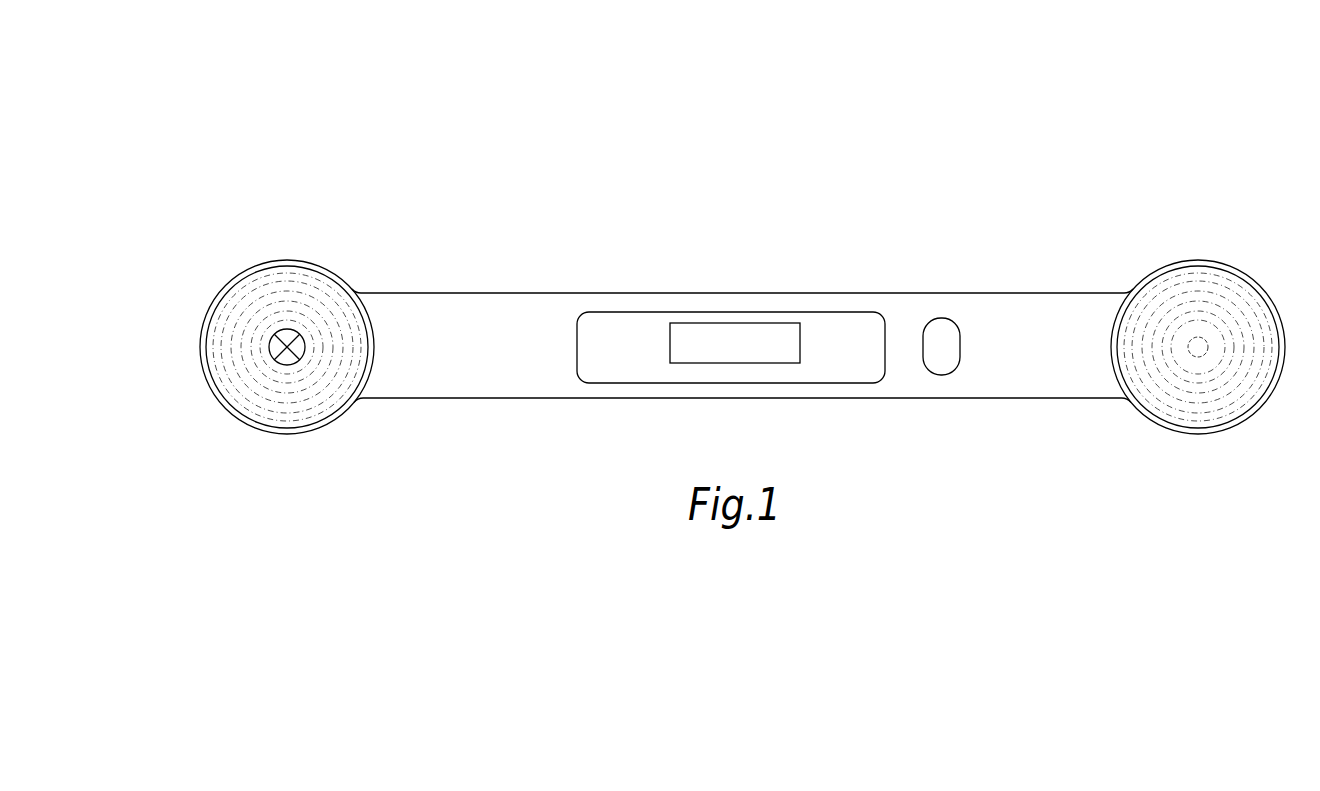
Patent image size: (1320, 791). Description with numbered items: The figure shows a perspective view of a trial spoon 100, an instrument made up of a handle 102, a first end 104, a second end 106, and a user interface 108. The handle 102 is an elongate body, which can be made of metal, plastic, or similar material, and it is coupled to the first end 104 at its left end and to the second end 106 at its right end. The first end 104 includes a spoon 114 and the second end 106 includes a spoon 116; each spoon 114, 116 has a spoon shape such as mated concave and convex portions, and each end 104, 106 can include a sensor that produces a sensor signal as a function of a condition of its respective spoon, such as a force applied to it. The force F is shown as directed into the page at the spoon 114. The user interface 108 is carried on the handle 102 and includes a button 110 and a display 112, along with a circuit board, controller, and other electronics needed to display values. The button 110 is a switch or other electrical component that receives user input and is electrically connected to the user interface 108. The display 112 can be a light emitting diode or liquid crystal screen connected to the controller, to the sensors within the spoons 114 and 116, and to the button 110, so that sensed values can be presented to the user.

The trial spoon 100 is at (202, 93).
The handle 102 is at (470, 312).
The first end 104 is at (333, 272).
The second end 106 is at (1162, 272).
The user interface 108 is at (687, 400).
The button 110 is at (940, 335).
The display 112 is at (744, 330).
The spoon 114 is at (277, 284).
The spoon 116 is at (1197, 284).
The force F is at (281, 349).